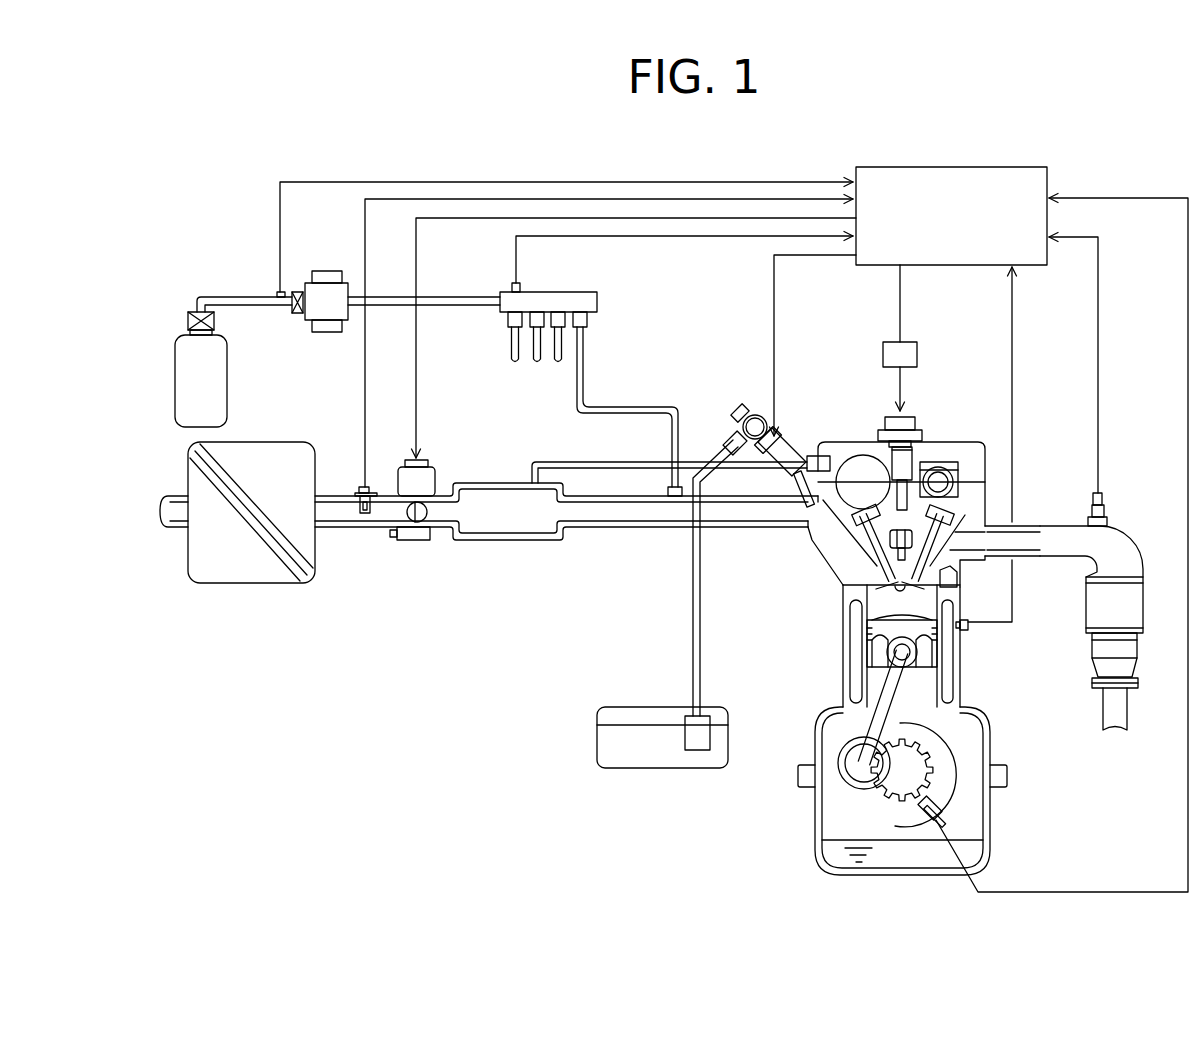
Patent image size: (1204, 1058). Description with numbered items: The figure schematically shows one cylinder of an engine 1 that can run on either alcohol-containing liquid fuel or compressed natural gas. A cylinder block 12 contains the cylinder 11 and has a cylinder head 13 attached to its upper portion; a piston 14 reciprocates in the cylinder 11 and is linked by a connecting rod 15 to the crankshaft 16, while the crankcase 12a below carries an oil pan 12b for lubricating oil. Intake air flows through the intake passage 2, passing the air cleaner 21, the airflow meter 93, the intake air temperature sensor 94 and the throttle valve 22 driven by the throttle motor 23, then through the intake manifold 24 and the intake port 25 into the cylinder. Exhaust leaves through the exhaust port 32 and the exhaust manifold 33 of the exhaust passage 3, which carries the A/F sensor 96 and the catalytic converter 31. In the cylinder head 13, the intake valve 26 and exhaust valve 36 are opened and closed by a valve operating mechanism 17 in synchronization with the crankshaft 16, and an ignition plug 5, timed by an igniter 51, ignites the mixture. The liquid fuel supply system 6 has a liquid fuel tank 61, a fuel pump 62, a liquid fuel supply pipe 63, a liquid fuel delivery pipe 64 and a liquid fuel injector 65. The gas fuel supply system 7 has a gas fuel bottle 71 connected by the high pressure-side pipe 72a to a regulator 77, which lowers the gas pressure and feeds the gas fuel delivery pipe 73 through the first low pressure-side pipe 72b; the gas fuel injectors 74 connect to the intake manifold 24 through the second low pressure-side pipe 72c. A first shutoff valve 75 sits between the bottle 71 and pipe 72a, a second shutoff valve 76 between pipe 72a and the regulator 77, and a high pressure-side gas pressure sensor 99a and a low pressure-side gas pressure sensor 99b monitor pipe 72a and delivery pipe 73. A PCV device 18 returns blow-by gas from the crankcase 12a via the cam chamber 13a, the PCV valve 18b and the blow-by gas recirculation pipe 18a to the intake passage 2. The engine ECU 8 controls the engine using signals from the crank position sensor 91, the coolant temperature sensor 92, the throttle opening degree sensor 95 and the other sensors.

The engine 1 is at (946, 438).
The intake passage 2 is at (624, 527).
The exhaust passage 3 is at (1033, 540).
The exhaust manifold 33 is at (1091, 551).
The ignition plug 5 is at (935, 440).
The liquid fuel supply system 6 is at (588, 729).
The gas fuel supply system 7 is at (192, 290).
The engine ECU 8 is at (1047, 182).
The cylinder 11 is at (850, 587).
The cylinder block 12 is at (848, 610).
The crankcase 12a is at (990, 745).
The oil pan 12b is at (818, 862).
The cylinder head 13 is at (995, 470).
The cam chamber 13a is at (845, 450).
The piston 14 is at (877, 657).
The connecting rod 15 is at (873, 692).
The crankshaft 16 is at (952, 782).
The valve operating mechanism 17 is at (960, 458).
The PCV device 18 is at (689, 435).
The blow-by gas recirculation pipe 18a is at (622, 462).
The PCV valve 18b is at (815, 456).
The air cleaner 21 is at (308, 578).
The throttle valve 22 is at (430, 515).
The throttle motor 23 is at (435, 475).
The intake manifold 24 is at (808, 505).
The intake port 25 is at (845, 538).
The intake valve 26 is at (857, 563).
The catalytic converter 31 is at (1100, 612).
The exhaust port 32 is at (1012, 530).
The exhaust valve 36 is at (968, 562).
The igniter 51 is at (883, 352).
The liquid fuel tank 61 is at (627, 707).
The fuel pump 62 is at (697, 750).
The liquid fuel supply pipe 63 is at (693, 630).
The liquid fuel delivery pipe 64 is at (768, 415).
The liquid fuel injector 65 is at (785, 440).
The gas fuel bottle 71 is at (227, 390).
The high pressure-side pipe 72a is at (228, 296).
The first low pressure-side pipe 72b is at (375, 297).
The second low pressure-side pipe 72c is at (588, 378).
The gas fuel delivery pipe 73 is at (590, 292).
The gas fuel injector 74 is at (534, 325).
The first shutoff valve 75 is at (188, 320).
The second shutoff valve 76 is at (296, 313).
The regulator 77 is at (328, 312).
The crank position sensor 91 is at (940, 812).
The coolant temperature sensor 92 is at (968, 628).
The airflow meter 93 is at (357, 490).
The intake air temperature sensor 94 is at (377, 505).
The throttle opening degree sensor 95 is at (407, 543).
The A/F sensor 96 is at (1104, 510).
The high pressure-side gas pressure sensor 99a is at (277, 294).
The low pressure-side gas pressure sensor 99b is at (512, 288).